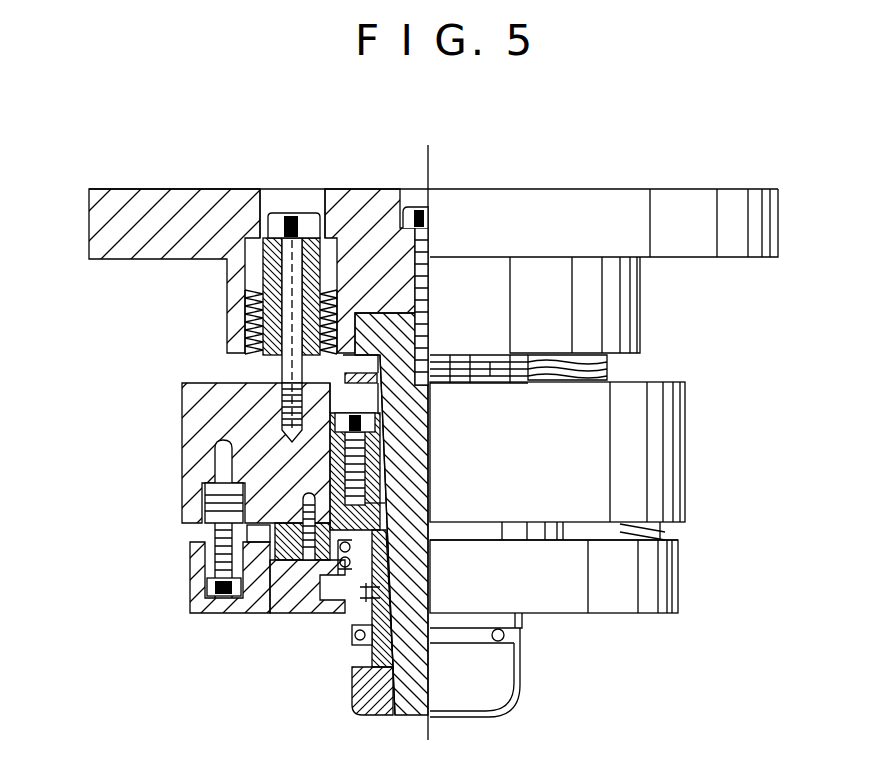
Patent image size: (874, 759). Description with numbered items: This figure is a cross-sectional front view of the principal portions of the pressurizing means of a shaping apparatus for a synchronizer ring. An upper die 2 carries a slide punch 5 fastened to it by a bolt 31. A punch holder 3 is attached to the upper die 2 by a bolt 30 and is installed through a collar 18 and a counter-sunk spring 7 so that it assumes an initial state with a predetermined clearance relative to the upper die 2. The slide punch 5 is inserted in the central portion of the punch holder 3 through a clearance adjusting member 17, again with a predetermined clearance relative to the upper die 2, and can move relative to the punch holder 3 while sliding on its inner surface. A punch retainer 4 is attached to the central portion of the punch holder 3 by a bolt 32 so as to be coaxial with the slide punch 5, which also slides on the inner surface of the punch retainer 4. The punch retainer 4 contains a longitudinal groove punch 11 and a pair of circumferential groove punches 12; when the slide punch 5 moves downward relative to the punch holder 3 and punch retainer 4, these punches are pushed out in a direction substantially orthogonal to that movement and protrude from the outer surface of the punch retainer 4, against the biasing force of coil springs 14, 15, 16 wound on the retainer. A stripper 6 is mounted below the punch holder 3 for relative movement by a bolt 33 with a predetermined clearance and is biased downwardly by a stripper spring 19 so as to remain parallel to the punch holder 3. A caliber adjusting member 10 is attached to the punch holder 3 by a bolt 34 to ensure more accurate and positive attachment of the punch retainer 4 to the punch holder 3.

The upper die 2 is at (89, 238).
The punch holder 3 is at (197, 414).
The punch retainer 4 is at (387, 492).
The slide punch 5 is at (392, 450).
The stripper 6 is at (190, 562).
The counter-sunk spring 7 is at (248, 318).
The caliber adjusting member 10 is at (270, 612).
The longitudinal groove punch 11 is at (343, 585).
The circumferential groove punch 12 is at (343, 600).
The coil spring 14 is at (386, 541).
The coil spring 15 is at (392, 583).
The coil spring 16 is at (352, 662).
The clearance adjusting member 17 is at (346, 360).
The collar 18 is at (263, 272).
The stripper spring 19 is at (205, 506).
The bolt 30 is at (290, 213).
The bolt 31 is at (428, 215).
The bolt 32 is at (366, 442).
The bolt 33 is at (218, 598).
The bolt 34 is at (385, 505).